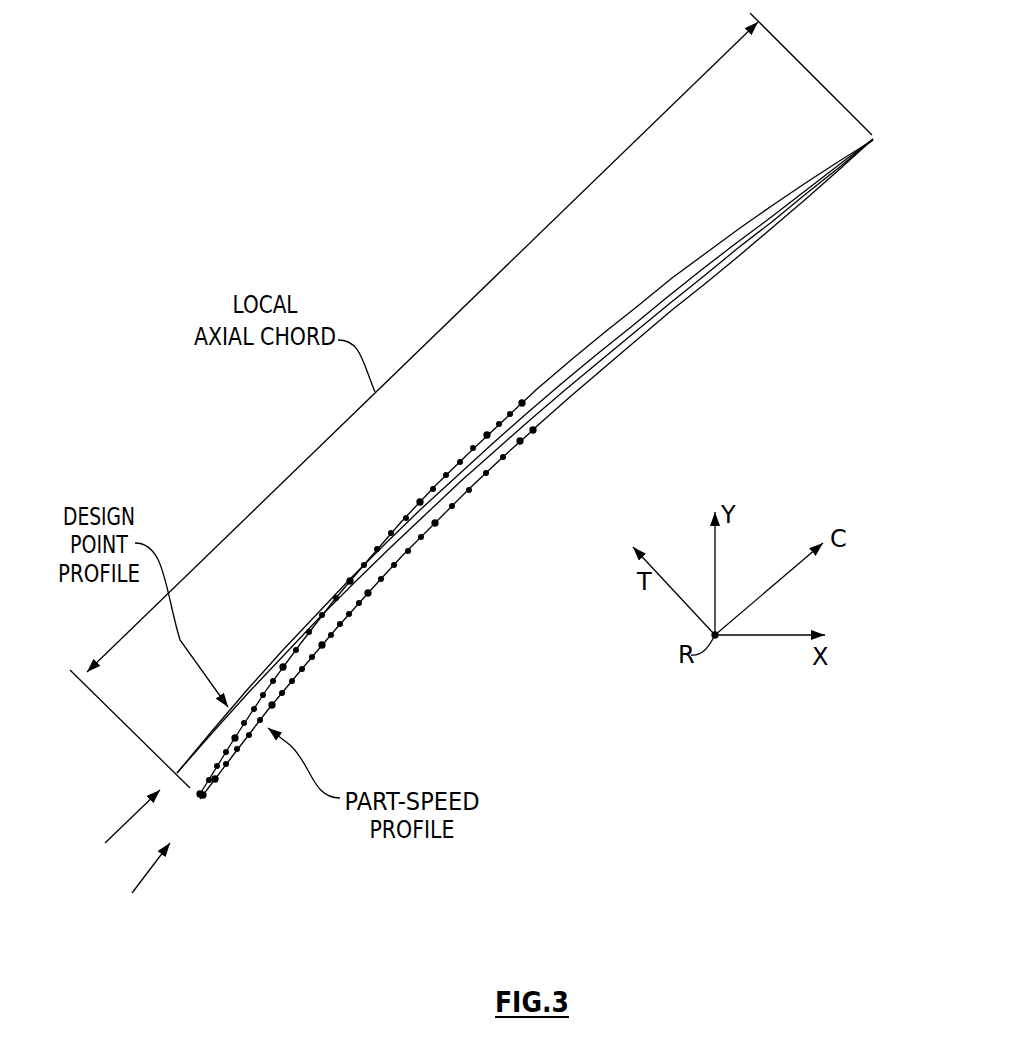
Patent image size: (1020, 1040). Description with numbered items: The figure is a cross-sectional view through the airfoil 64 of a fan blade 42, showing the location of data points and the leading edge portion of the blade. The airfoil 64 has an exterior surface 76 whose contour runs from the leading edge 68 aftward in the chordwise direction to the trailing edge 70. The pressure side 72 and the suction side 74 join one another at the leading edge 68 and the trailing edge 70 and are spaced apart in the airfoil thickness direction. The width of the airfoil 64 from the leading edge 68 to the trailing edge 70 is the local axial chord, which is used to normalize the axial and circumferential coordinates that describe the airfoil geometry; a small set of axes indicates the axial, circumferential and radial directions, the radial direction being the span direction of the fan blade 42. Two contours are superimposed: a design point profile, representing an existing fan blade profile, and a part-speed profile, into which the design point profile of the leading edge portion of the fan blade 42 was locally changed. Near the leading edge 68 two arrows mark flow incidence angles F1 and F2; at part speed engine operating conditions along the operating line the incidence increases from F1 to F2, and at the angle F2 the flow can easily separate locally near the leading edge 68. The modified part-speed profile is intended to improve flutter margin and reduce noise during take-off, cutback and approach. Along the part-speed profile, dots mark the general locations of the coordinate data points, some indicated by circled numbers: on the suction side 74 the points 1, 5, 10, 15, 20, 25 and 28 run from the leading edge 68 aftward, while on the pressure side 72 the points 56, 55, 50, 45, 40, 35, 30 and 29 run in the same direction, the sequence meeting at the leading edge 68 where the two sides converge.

The fan blade 42 is at (680, 252).
The trailing edge 70 is at (873, 138).
The suction side 74 is at (588, 343).
The exterior surface 76 is at (702, 282).
The airfoil 64 is at (678, 307).
The pressure side 72 is at (603, 368).
The leading edge 68 is at (201, 797).
The data point 1 is at (200, 794).
The data point 5 is at (235, 738).
The data point 10 is at (283, 667).
The data point 15 is at (350, 581).
The data point 20 is at (420, 502).
The data point 25 is at (487, 435).
The data point 28 is at (522, 403).
The data point 29 is at (533, 430).
The data point 30 is at (520, 441).
The data point 35 is at (435, 523).
The data point 40 is at (368, 593).
The data point 45 is at (322, 645).
The data point 50 is at (272, 705).
The data point 55 is at (215, 779).
The data point 56 is at (203, 795).
The flow incidence angle F1 is at (122, 822).
The flow incidence angle F2 is at (132, 893).